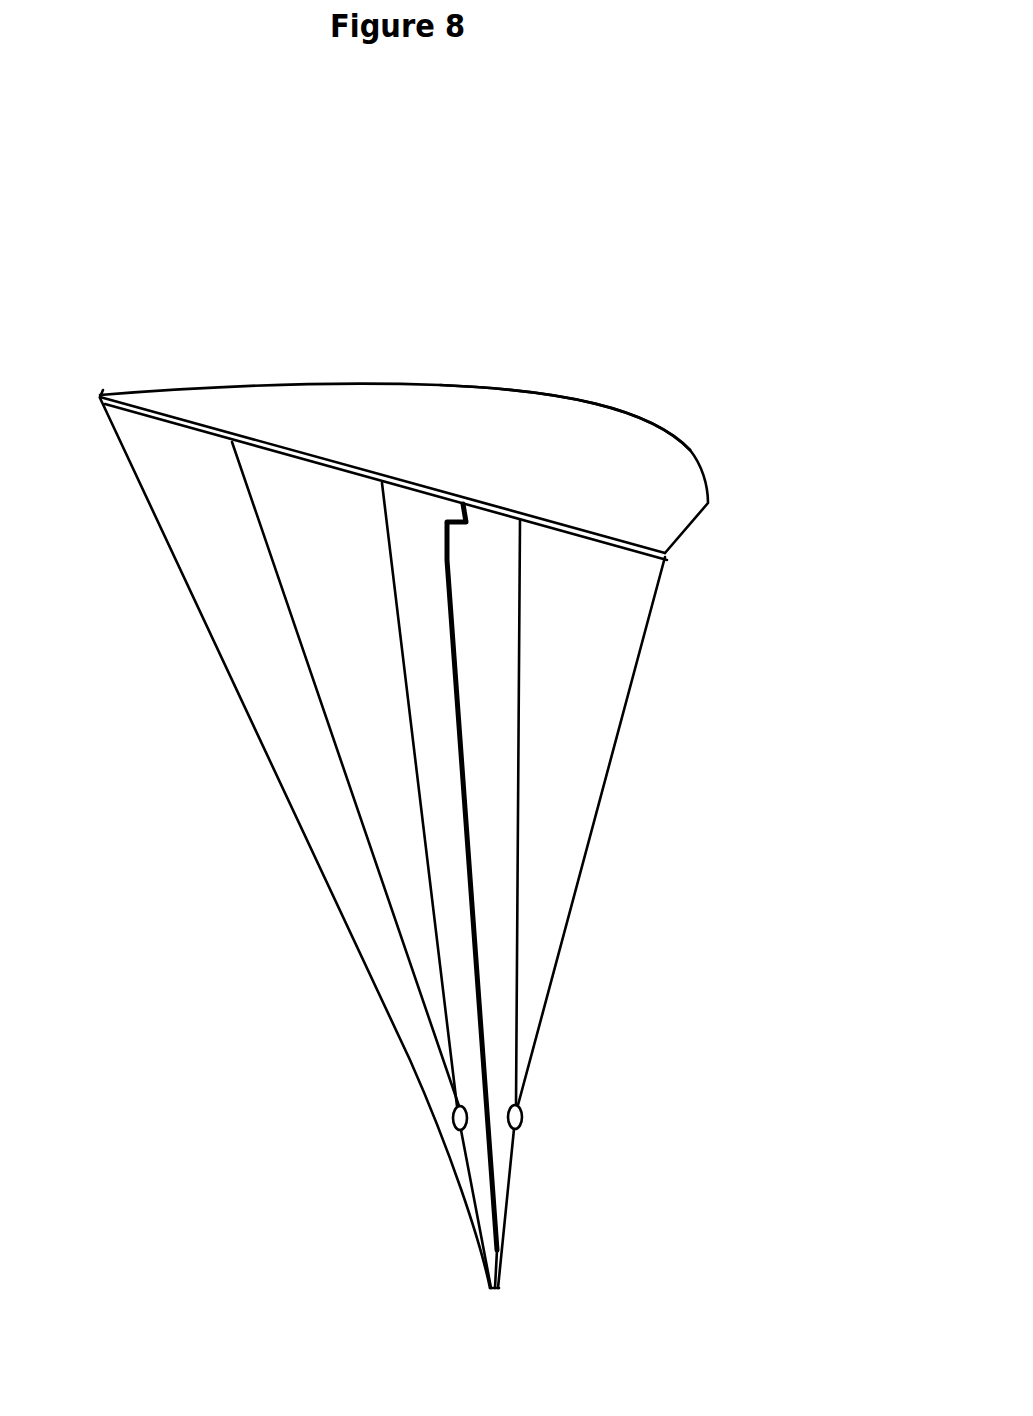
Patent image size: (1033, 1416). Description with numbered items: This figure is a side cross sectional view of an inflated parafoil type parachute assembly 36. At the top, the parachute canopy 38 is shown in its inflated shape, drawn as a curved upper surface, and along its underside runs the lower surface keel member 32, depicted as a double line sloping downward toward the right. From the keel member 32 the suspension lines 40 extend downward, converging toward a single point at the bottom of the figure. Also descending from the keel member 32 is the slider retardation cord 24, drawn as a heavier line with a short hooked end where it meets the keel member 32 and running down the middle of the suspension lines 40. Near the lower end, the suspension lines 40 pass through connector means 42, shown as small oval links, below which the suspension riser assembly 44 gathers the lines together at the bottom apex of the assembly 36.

The parafoil type parachute assembly 36 is at (458, 327).
The parachute canopy 38 is at (488, 387).
The lower surface keel member 32 is at (503, 503).
The suspension lines 40 is at (643, 643).
The slider retardation cord 24 is at (468, 837).
The connector means 42 is at (522, 1102).
The suspension riser assembly 44 is at (510, 1193).